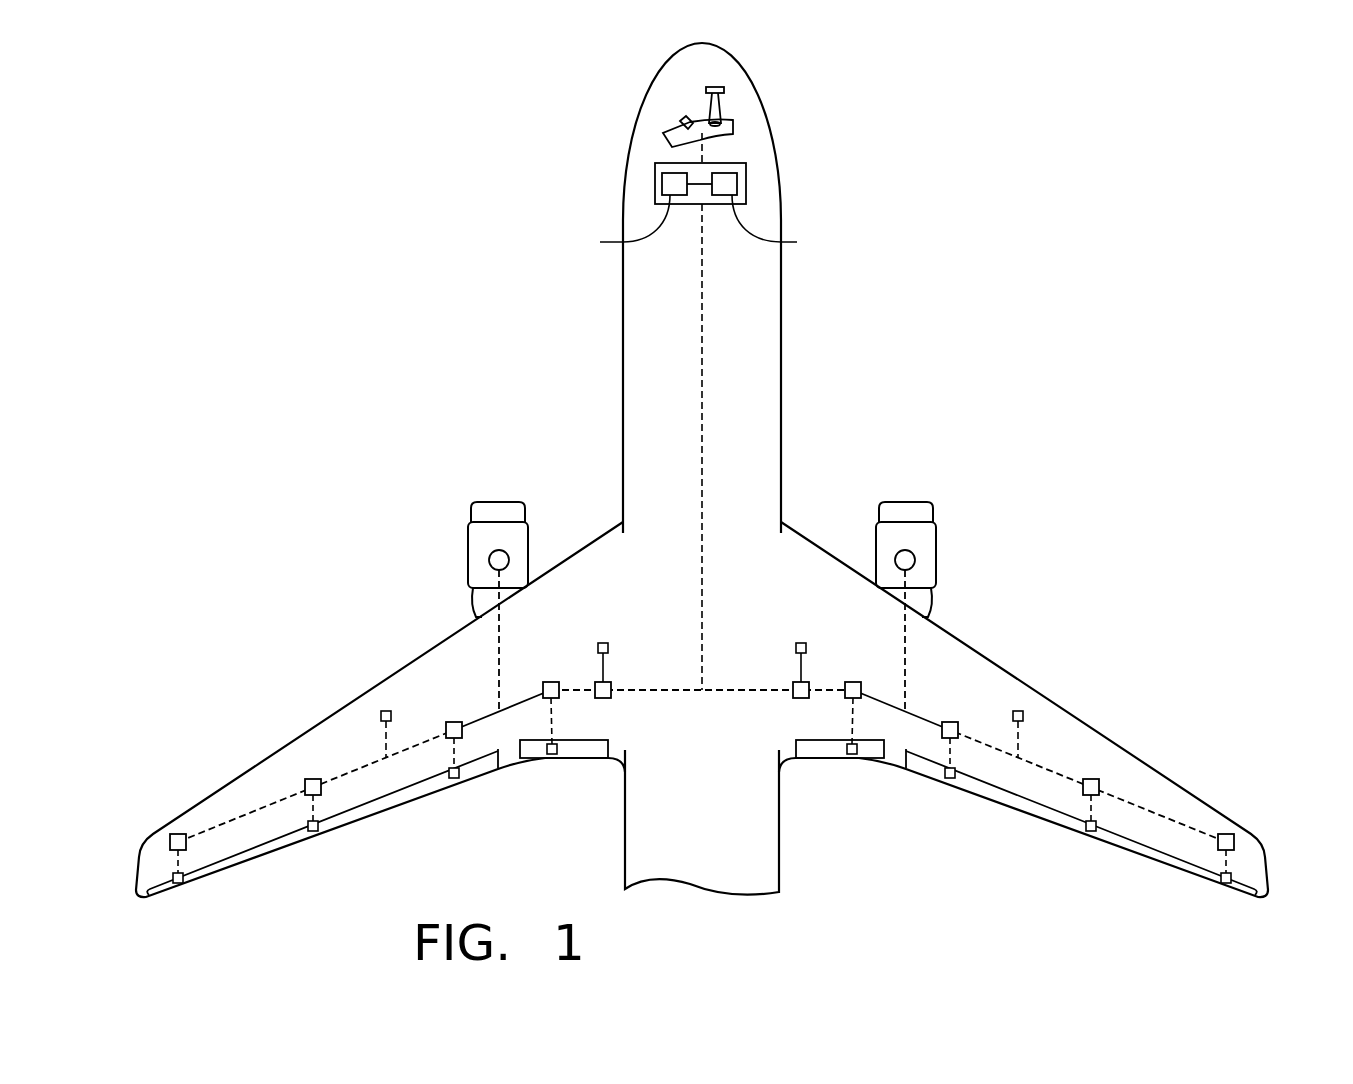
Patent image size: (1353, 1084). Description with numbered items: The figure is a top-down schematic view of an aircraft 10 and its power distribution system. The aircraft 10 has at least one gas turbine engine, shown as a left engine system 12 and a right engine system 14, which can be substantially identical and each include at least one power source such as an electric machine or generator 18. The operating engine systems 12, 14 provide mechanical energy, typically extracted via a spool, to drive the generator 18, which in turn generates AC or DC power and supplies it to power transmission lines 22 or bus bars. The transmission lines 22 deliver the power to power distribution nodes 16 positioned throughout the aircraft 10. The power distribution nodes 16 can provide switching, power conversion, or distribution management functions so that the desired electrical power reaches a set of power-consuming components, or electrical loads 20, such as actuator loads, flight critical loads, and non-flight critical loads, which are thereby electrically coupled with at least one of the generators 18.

The aircraft 10 is at (503, 158).
The left engine system 12 is at (490, 502).
The right engine system 14 is at (929, 503).
The power distribution nodes 16 is at (559, 698).
The generator 18 is at (506, 551).
The electrical loads 20 is at (1225, 883).
The power transmission lines 22 is at (700, 300).